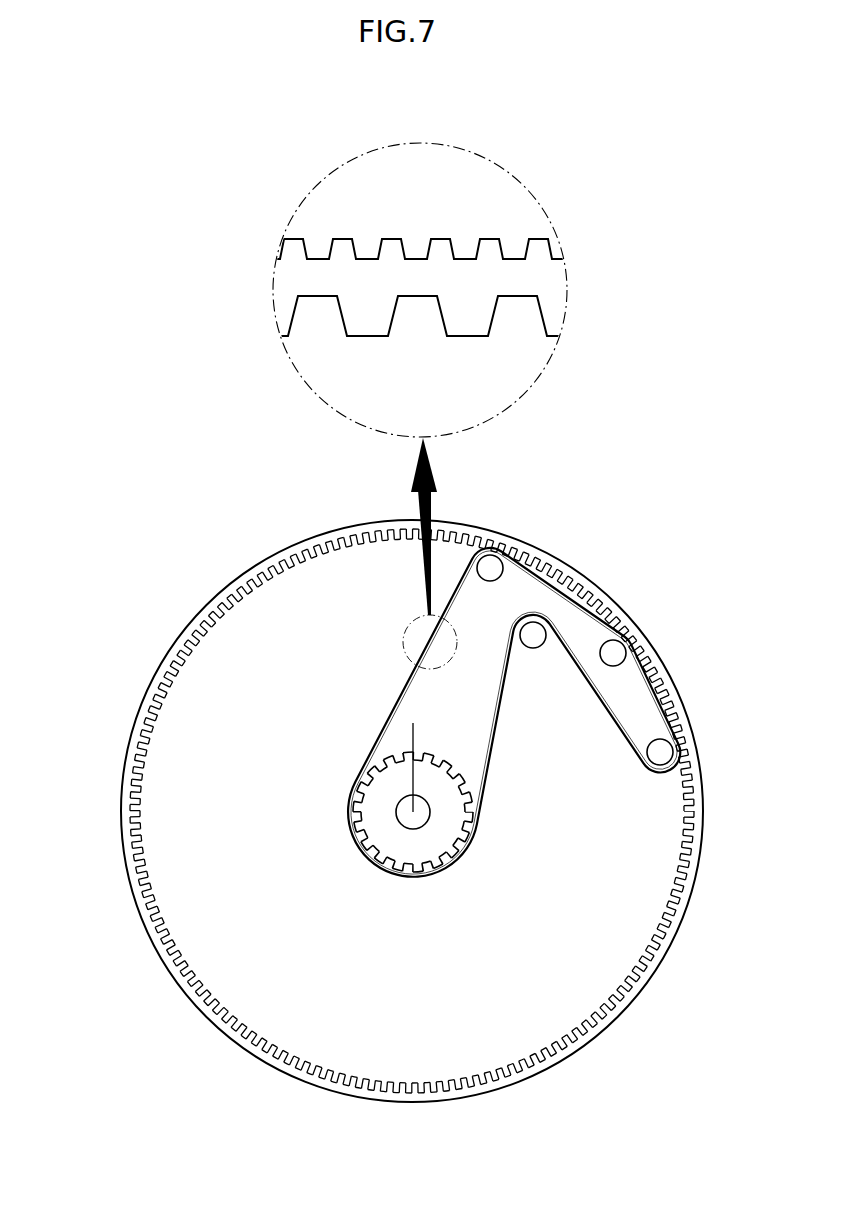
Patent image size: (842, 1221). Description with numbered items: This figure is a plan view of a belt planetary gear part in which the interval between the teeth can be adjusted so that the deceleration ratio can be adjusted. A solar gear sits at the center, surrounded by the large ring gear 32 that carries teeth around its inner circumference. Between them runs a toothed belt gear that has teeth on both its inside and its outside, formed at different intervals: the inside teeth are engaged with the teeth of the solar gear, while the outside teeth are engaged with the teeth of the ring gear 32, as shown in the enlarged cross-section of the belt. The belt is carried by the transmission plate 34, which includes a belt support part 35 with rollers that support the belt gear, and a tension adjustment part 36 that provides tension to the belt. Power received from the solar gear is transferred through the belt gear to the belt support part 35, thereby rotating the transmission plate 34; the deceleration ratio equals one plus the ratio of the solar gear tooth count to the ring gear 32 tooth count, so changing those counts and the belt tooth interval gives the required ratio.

The ring gear 32 is at (197, 628).
The transmission plate 34 is at (175, 752).
The belt support part 35 is at (492, 567).
The tension adjustment part 36 is at (538, 633).